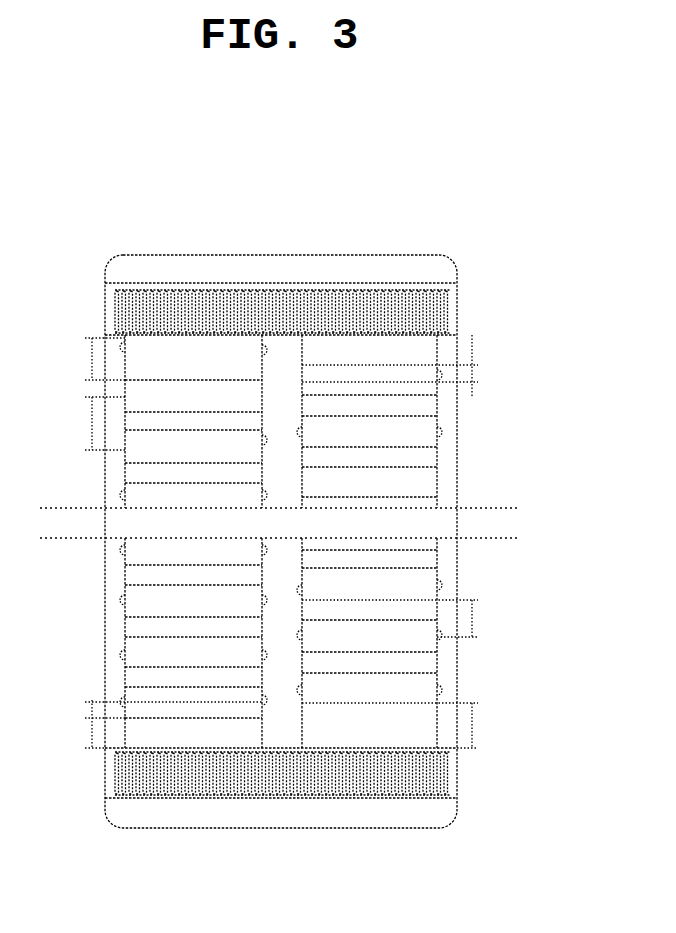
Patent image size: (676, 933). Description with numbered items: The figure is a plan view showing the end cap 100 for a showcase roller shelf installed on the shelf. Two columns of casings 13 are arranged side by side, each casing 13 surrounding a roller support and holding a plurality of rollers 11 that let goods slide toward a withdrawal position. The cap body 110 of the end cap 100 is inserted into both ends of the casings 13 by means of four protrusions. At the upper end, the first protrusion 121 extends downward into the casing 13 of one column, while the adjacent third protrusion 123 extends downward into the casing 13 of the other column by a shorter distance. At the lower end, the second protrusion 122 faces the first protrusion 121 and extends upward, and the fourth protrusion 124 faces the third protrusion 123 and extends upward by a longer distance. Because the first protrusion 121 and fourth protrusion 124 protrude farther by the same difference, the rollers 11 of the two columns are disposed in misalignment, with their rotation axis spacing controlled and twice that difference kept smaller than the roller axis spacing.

The end cap 100 is at (437, 246).
The cap body 110 is at (263, 262).
The rollers 11 is at (145, 598).
The casing 13 is at (455, 460).
The first protrusion 121 is at (113, 304).
The second protrusion 122 is at (105, 778).
The third protrusion 123 is at (452, 300).
The fourth protrusion 124 is at (460, 787).